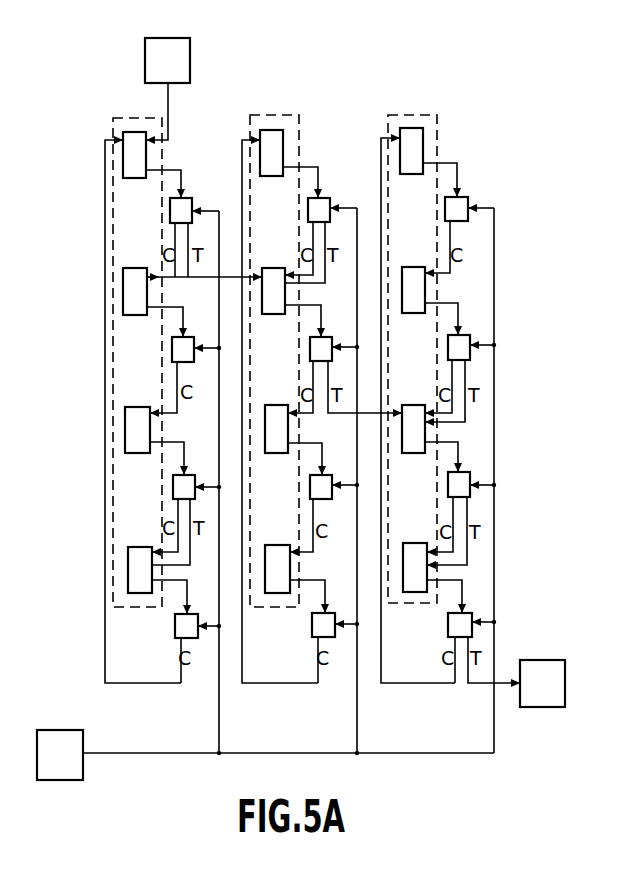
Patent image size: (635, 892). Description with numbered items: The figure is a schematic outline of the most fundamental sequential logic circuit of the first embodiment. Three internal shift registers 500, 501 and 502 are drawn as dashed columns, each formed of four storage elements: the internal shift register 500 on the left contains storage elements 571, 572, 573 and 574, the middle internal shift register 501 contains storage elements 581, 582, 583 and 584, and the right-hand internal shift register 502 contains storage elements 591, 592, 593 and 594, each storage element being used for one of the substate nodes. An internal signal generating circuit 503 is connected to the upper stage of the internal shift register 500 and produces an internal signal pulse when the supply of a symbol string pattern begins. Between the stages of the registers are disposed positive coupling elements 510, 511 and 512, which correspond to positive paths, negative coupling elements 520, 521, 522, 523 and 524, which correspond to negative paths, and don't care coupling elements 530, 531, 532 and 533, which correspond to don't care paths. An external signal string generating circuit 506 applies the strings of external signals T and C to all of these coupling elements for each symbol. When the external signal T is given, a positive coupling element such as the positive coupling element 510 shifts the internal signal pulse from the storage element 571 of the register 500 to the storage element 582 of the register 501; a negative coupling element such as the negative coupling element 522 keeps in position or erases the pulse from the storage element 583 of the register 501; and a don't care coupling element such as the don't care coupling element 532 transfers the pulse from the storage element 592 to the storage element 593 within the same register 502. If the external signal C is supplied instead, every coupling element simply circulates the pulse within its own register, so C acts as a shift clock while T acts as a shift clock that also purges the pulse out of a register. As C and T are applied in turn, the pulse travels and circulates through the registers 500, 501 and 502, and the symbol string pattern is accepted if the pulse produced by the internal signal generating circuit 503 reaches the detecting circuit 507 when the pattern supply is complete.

The internal signal generating circuit 503 is at (190, 62).
The external signal string generating circuit 506 is at (84, 742).
The detecting circuit 507 is at (566, 678).
The internal shift register 500 is at (130, 607).
The internal shift register 501 is at (256, 607).
The internal shift register 502 is at (432, 603).
The storage element 571 is at (150, 151).
The storage element 572 is at (150, 291).
The storage element 573 is at (145, 395).
The storage element 574 is at (146, 528).
The storage element 581 is at (272, 176).
The storage element 582 is at (283, 257).
The storage element 583 is at (284, 395).
The storage element 584 is at (284, 530).
The storage element 591 is at (423, 148).
The storage element 592 is at (418, 267).
The storage element 593 is at (420, 395).
The storage element 594 is at (421, 530).
The positive coupling element 510 is at (192, 205).
The positive coupling element 511 is at (329, 337).
The positive coupling element 512 is at (470, 598).
The negative coupling element 520 is at (186, 337).
The negative coupling element 521 is at (192, 614).
The negative coupling element 522 is at (326, 475).
The negative coupling element 523 is at (336, 598).
The negative coupling element 524 is at (467, 198).
The don't care coupling element 530 is at (186, 475).
The don't care coupling element 531 is at (328, 200).
The don't care coupling element 532 is at (462, 335).
The don't care coupling element 533 is at (462, 472).